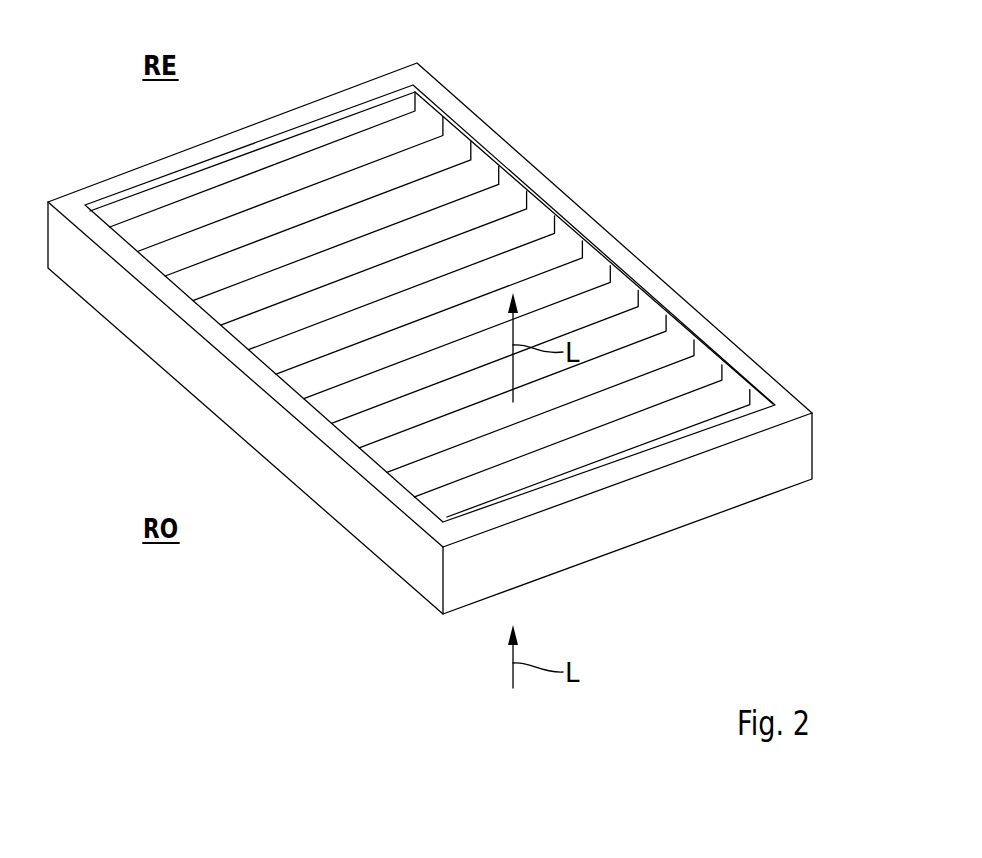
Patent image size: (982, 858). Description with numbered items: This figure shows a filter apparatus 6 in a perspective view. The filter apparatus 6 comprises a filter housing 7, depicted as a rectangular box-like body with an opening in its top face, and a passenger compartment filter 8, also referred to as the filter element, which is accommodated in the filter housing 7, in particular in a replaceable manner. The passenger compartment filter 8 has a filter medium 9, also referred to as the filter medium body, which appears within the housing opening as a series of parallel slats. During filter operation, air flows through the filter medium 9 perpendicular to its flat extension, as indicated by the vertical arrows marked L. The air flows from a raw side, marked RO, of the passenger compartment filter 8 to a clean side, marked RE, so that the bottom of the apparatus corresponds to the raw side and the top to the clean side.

The filter apparatus 6 is at (717, 187).
The filter housing 7 is at (452, 110).
The passenger compartment filter 8 is at (430, 304).
The filter medium 9 is at (543, 222).